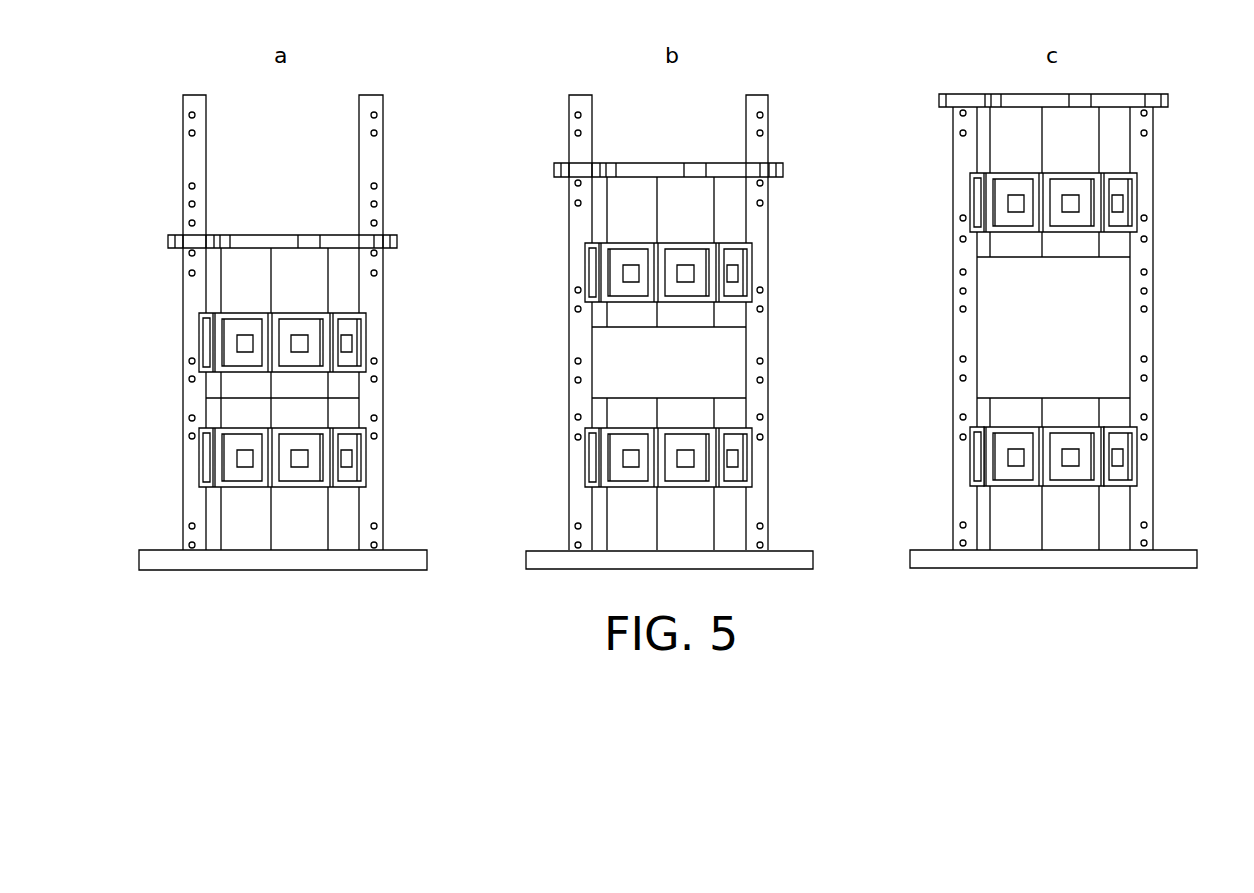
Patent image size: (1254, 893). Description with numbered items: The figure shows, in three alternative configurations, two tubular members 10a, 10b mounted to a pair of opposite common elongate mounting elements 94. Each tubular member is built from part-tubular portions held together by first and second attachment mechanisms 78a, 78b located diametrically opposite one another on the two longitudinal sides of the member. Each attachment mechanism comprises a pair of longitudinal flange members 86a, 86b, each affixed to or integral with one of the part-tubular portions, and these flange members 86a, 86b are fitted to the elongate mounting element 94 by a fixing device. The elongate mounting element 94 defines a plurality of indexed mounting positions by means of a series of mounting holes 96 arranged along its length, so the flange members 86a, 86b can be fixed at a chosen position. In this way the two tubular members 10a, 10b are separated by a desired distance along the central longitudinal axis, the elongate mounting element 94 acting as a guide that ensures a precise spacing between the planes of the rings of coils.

In FIG. 5a, the tubular member 10a is at (348, 299).
In FIG. 5a, the tubular member 10b is at (292, 534).
In FIG. 5c, the first attachment mechanism 78a is at (958, 427).
In FIG. 5c, the second attachment mechanism 78b is at (1147, 427).
In FIG. 5a, the longitudinal flange member 86a is at (189, 500).
In FIG. 5b, the longitudinal flange member 86a is at (575, 498).
In FIG. 5c, the longitudinal flange member 86a is at (959, 505).
In FIG. 5a, the longitudinal flange member 86b is at (376, 500).
In FIG. 5b, the longitudinal flange member 86b is at (763, 497).
In FIG. 5c, the longitudinal flange member 86b is at (1148, 505).
In FIG. 5a, the elongate mounting element 94 is at (192, 104).
In FIG. 5b, the elongate mounting element 94 is at (578, 104).
In FIG. 5c, the elongate mounting element 94 is at (962, 316).
In FIG. 5a, the mounting hole 96 is at (377, 186).